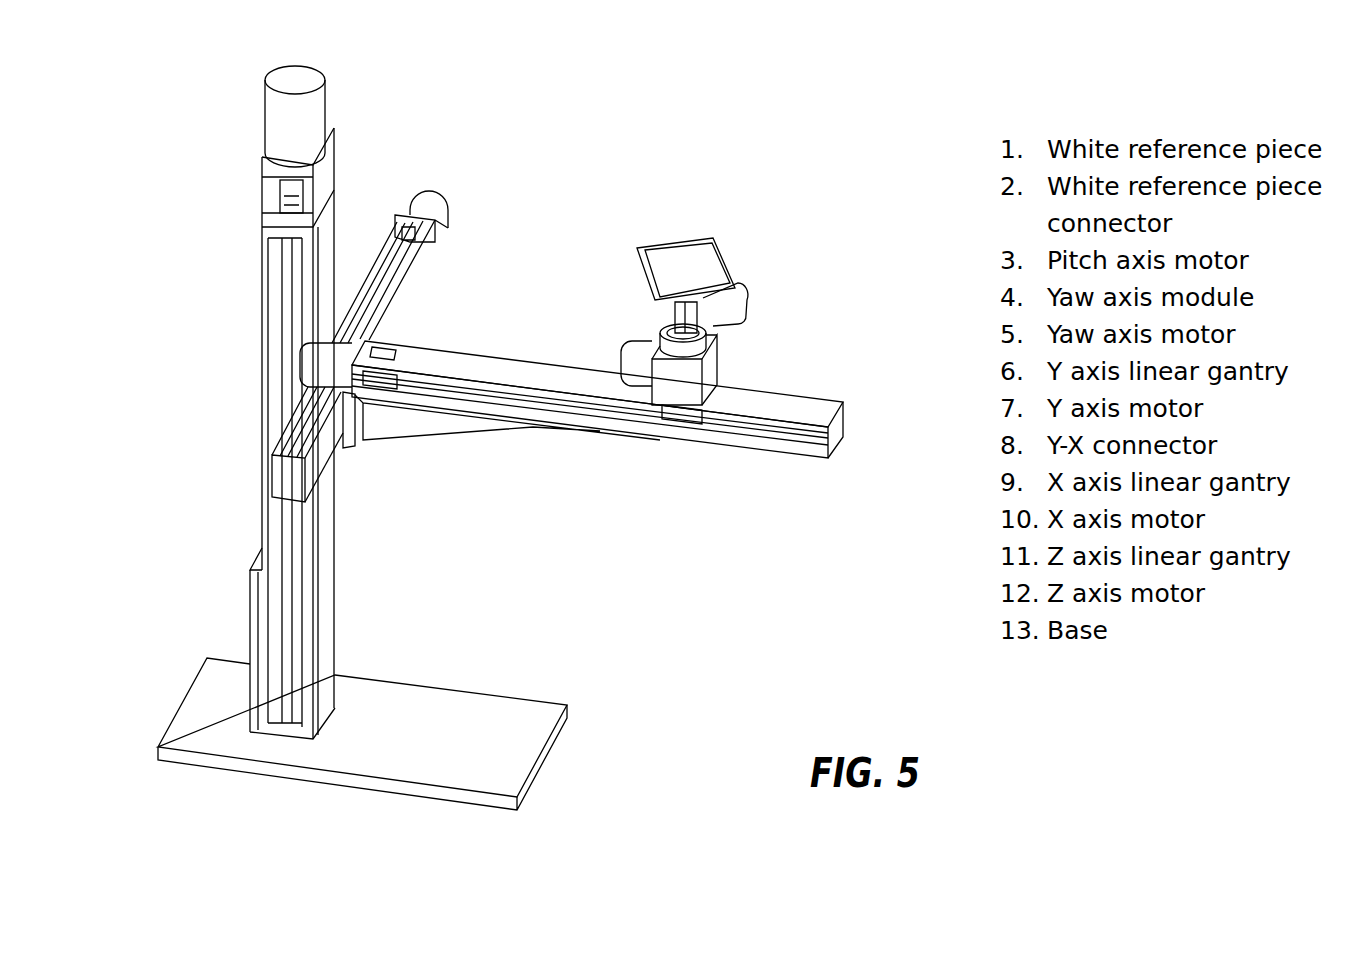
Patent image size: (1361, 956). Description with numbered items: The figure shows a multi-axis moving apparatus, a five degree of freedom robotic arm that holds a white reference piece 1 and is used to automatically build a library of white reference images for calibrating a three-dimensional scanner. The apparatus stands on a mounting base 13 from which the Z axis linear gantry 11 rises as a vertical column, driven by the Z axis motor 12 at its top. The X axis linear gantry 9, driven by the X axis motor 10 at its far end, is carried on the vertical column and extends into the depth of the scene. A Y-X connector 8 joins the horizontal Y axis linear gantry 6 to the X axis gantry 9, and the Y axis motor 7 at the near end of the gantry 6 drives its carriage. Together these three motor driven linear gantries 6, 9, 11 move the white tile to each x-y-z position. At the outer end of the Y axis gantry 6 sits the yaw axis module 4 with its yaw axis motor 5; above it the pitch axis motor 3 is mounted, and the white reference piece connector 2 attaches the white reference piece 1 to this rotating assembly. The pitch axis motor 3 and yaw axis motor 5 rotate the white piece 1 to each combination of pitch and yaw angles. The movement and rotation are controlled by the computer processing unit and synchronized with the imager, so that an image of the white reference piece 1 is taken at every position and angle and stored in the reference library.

The white reference piece 1 is at (677, 267).
The white reference piece connector 2 is at (680, 332).
The pitch axis motor 3 is at (727, 307).
The yaw axis module 4 is at (673, 355).
The yaw axis motor 5 is at (628, 367).
The Y axis linear gantry 6 is at (550, 400).
The Y axis motor 7 is at (340, 360).
The Y-X connector 8 is at (380, 425).
The X axis linear gantry 9 is at (390, 299).
The X axis motor 10 is at (437, 213).
The Z axis linear gantry 11 is at (275, 405).
The Z axis motor 12 is at (287, 112).
The base 13 is at (242, 680).